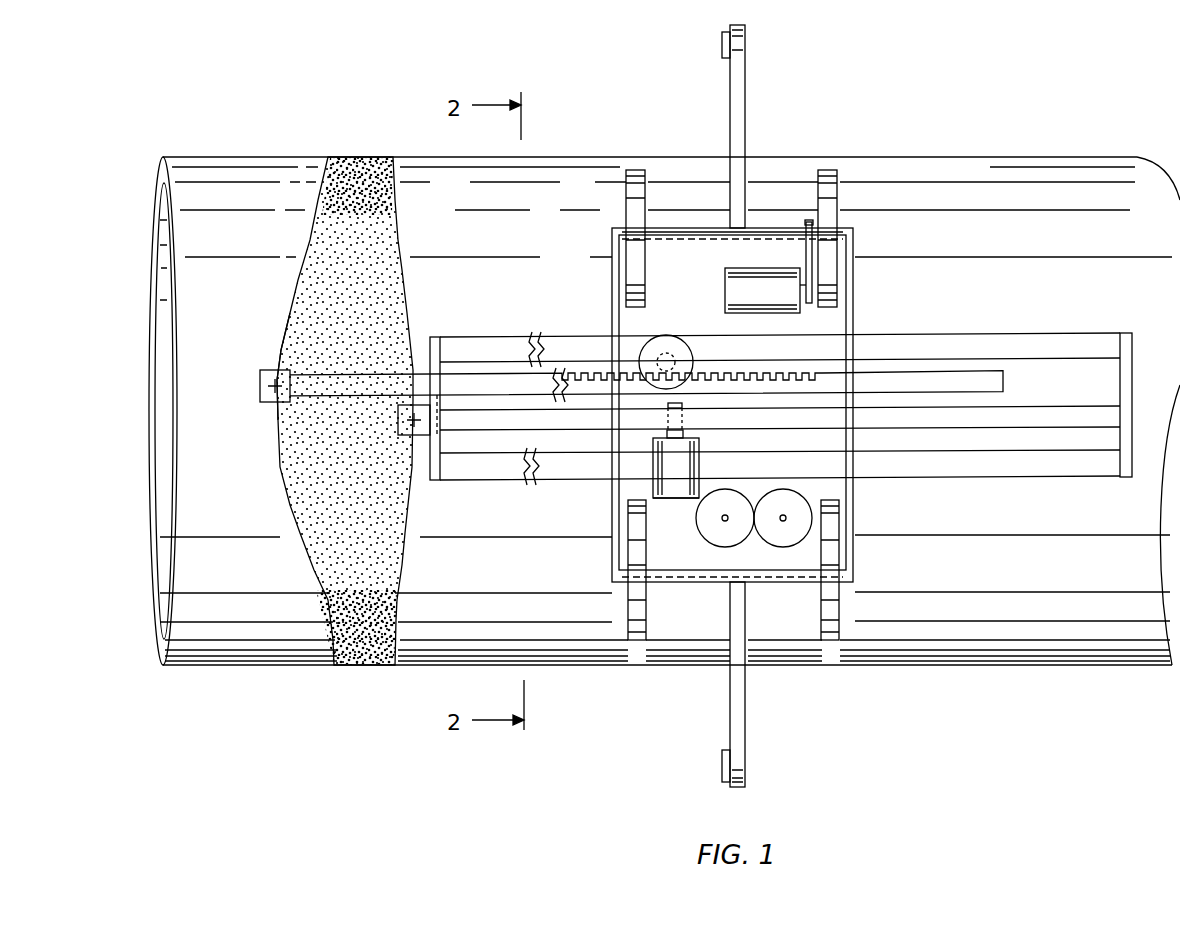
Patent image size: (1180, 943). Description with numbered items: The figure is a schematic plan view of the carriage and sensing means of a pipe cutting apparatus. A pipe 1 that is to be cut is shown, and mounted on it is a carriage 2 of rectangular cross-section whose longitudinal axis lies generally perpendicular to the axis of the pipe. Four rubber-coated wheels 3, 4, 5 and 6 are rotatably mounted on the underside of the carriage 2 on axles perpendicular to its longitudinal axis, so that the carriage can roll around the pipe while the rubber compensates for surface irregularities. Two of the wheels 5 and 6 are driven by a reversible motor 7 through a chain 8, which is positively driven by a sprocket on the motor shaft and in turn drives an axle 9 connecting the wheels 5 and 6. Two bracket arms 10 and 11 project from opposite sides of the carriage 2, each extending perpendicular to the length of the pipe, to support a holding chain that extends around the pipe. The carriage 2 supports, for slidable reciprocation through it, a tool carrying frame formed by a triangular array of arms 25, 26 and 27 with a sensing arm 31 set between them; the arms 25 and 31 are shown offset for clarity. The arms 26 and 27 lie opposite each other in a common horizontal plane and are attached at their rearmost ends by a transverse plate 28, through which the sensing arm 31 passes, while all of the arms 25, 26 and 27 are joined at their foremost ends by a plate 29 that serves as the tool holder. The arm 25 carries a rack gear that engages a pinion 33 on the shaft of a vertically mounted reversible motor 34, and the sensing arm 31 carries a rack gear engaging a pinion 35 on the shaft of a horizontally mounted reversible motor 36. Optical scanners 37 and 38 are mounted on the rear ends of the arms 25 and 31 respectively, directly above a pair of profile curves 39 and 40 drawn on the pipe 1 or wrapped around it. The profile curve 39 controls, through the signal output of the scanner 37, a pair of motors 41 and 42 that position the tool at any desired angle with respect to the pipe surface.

The pipe 1 is at (890, 152).
The carriage 2 is at (853, 510).
The wheel 3 is at (838, 622).
The wheel 4 is at (646, 626).
The wheel 5 is at (838, 188).
The wheel 6 is at (626, 186).
The reversible motor 7 is at (727, 282).
The chain 8 is at (806, 262).
The axle 9 is at (672, 240).
The bracket arm 10 is at (748, 732).
The bracket arm 11 is at (745, 82).
The arm 25 is at (493, 425).
The arm 26 is at (477, 336).
The arm 27 is at (440, 481).
The transverse plate 28 is at (430, 343).
The frame or plate 29 is at (1133, 393).
The sensing arm 31 is at (540, 371).
The pinion 33 is at (670, 430).
The reversible motor 34 is at (683, 498).
The pinion 35 is at (673, 357).
The reversible motor 36 is at (645, 337).
The optical scanner 37 is at (262, 402).
The optical scanner 38 is at (398, 421).
The profile curve 39 is at (287, 313).
The profile curve 40 is at (396, 233).
The motor 41 is at (703, 541).
The motor 42 is at (803, 540).